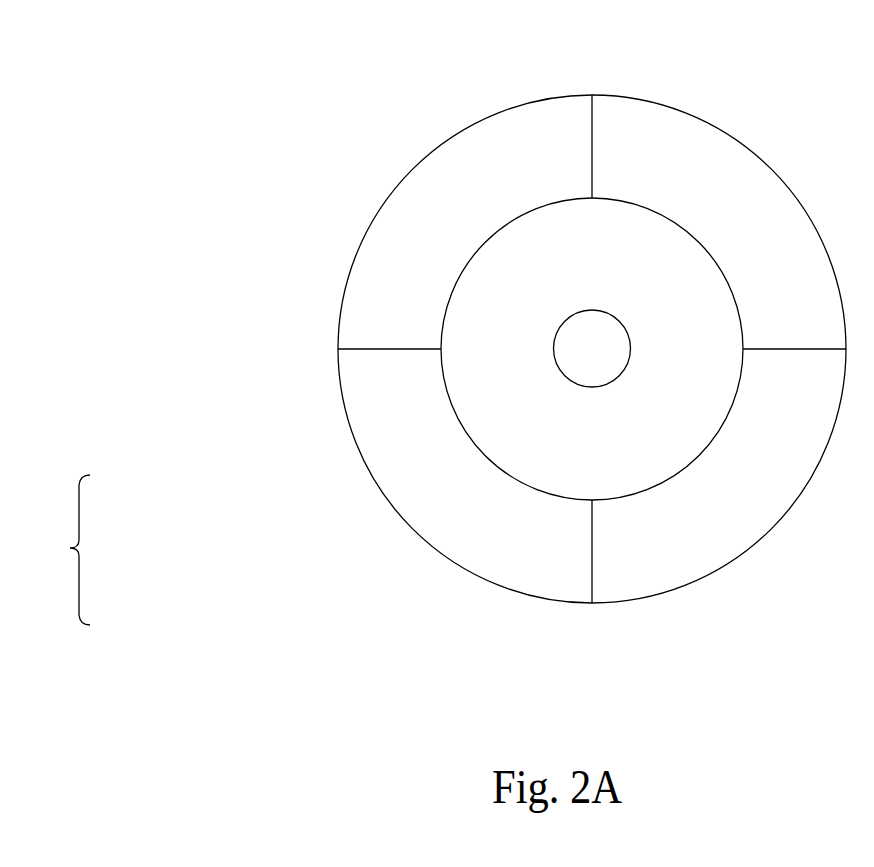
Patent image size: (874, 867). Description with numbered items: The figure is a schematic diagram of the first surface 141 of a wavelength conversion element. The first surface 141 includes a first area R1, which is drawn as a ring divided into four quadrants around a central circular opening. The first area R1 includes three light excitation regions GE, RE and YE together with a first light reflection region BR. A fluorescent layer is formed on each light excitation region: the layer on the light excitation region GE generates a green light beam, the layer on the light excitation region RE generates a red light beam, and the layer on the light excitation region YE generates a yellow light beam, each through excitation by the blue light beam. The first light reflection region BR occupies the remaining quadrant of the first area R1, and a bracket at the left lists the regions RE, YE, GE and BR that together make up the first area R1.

The first surface 141 is at (567, 315).
The first area R1 is at (80, 550).
The light excitation region RE is at (465, 222).
The light excitation region YE is at (777, 270).
The light excitation region GE is at (505, 534).
The first light reflection region BR is at (734, 492).